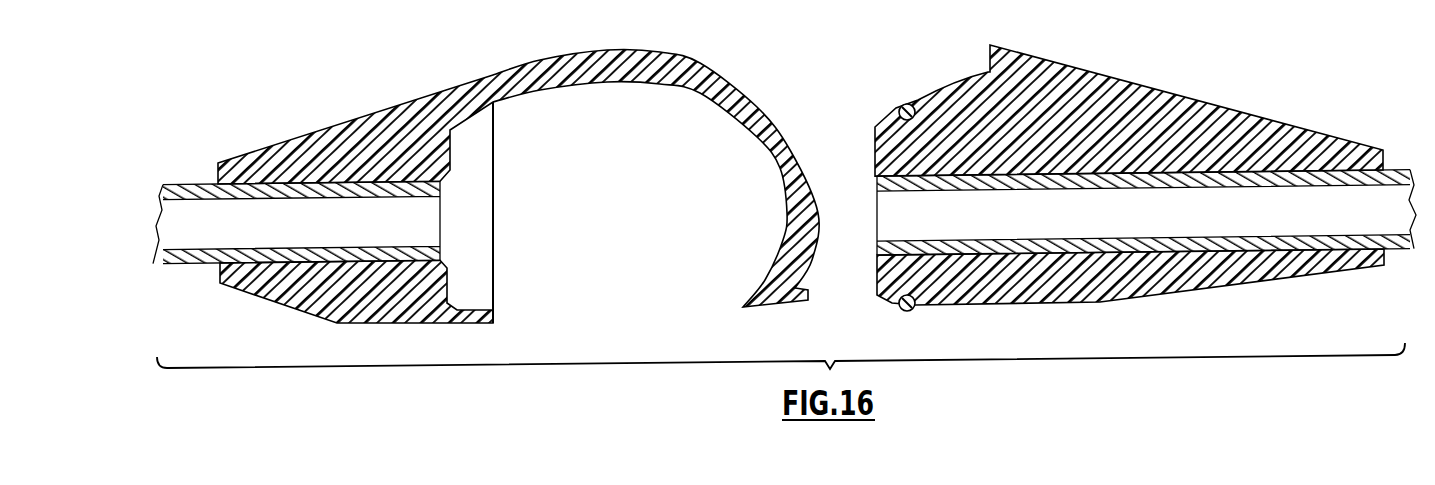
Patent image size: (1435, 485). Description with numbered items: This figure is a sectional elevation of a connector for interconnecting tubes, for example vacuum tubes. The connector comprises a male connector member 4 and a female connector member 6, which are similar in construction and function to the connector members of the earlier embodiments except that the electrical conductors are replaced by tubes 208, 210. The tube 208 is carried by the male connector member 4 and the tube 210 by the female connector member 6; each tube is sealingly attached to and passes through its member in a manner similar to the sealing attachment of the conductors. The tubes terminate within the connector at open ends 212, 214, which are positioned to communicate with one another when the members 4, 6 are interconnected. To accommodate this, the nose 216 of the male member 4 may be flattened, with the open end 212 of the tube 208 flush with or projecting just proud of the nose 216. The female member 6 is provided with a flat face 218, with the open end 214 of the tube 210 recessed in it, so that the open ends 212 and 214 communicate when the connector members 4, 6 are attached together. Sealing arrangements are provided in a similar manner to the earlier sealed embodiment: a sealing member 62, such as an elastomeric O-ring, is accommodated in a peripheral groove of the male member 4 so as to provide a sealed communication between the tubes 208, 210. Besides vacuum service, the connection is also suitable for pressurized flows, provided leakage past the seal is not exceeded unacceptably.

The male connector member 4 is at (1210, 87).
The female connector member 6 is at (367, 98).
The sealing member 62 is at (910, 311).
The tube 208 is at (1052, 230).
The tube 210 is at (245, 235).
The open end 212 is at (875, 250).
The open end 214 is at (442, 220).
The nose 216 is at (877, 153).
The flat face 218 is at (450, 154).